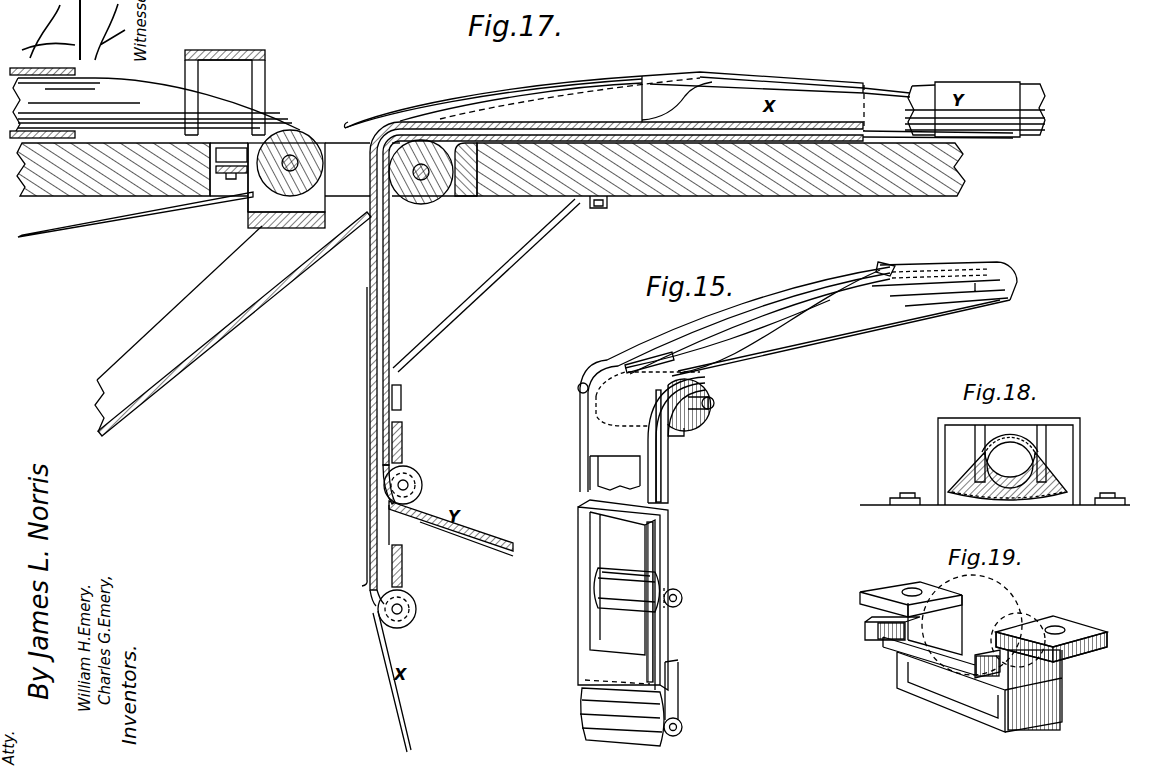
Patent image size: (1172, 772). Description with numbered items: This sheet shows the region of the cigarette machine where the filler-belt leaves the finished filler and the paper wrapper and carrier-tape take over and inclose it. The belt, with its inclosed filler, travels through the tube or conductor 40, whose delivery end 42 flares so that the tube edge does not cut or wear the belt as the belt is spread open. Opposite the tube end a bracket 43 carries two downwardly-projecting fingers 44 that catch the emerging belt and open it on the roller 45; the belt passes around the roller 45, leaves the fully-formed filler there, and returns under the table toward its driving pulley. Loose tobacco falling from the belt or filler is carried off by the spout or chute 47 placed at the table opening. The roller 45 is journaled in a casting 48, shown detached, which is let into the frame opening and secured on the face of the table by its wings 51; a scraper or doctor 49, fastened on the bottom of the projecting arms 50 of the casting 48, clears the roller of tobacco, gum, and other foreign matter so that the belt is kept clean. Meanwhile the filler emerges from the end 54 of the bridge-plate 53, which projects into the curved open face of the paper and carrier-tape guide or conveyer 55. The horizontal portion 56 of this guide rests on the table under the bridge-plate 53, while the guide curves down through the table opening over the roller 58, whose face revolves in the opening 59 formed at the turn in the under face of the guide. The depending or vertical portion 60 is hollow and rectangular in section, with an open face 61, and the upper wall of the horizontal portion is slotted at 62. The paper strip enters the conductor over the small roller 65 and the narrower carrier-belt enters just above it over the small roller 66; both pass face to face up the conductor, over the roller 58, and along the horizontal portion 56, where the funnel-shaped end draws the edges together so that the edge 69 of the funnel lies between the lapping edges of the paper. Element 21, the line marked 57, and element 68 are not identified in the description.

In FIG. 17, the shoe / guide block 21 is at (156, 104).
In FIG. 18, the shoe / guide block 21 is at (1050, 494).
In FIG. 17, the tube or conductor 40 is at (17, 142).
In FIG. 18, the tube or conductor 40 is at (1022, 442).
In FIG. 17, the delivery end 42 is at (70, 137).
In FIG. 17, the bracket 43 is at (225, 83).
In FIG. 18, the bracket 43 is at (1009, 453).
In FIG. 17, the downwardly-projecting fingers 44 is at (225, 79).
In FIG. 18, the downwardly-projecting fingers 44 is at (1007, 453).
In FIG. 17, the roller 45 is at (293, 138).
In FIG. 19, the roller 45 is at (976, 625).
In FIG. 17, the spout or chute 47 is at (233, 324).
In FIG. 17, the casting 48 is at (286, 214).
In FIG. 19, the casting 48 is at (911, 593).
In FIG. 17, the scraper or doctor 49 is at (231, 179).
In FIG. 19, the scraper or doctor 49 is at (905, 650).
In FIG. 17, the projecting arms 50 is at (231, 155).
In FIG. 19, the projecting arms 50 is at (866, 630).
In FIG. 19, the wings 51 is at (862, 597).
In FIG. 17, the bridge-plate 53 is at (493, 102).
In FIG. 17, the end of the bridge-plate 54 is at (638, 96).
In FIG. 17, the paper and carrier-tape guide or conveyer 55 is at (691, 364).
In FIG. 15, the paper and carrier-tape guide or conveyer 55 is at (612, 366).
In FIG. 17, the horizontal portion of the guide 56 is at (750, 144).
In FIG. 15, the horizontal portion of the guide 56 is at (762, 360).
In FIG. 17, the cover inner line 57 is at (511, 122).
In FIG. 17, the roller 58 is at (421, 183).
In FIG. 15, the roller 58 is at (707, 418).
In FIG. 17, the opening 59 is at (463, 152).
In FIG. 15, the opening 59 is at (674, 432).
In FIG. 15, the depending or vertical portion of the guide 60 is at (660, 510).
In FIG. 17, the open face 61 is at (368, 410).
In FIG. 15, the open face 61 is at (596, 472).
In FIG. 15, the slot 62 is at (697, 352).
In FIG. 17, the small roller 65 is at (410, 609).
In FIG. 15, the small roller 65 is at (681, 738).
In FIG. 17, the small roller 66 is at (416, 485).
In FIG. 15, the small roller 66 is at (682, 592).
In FIG. 15, the handle end 68 is at (1012, 277).
In FIG. 17, the edge of the funnel 69 is at (784, 88).
In FIG. 15, the edge of the funnel 69 is at (884, 272).